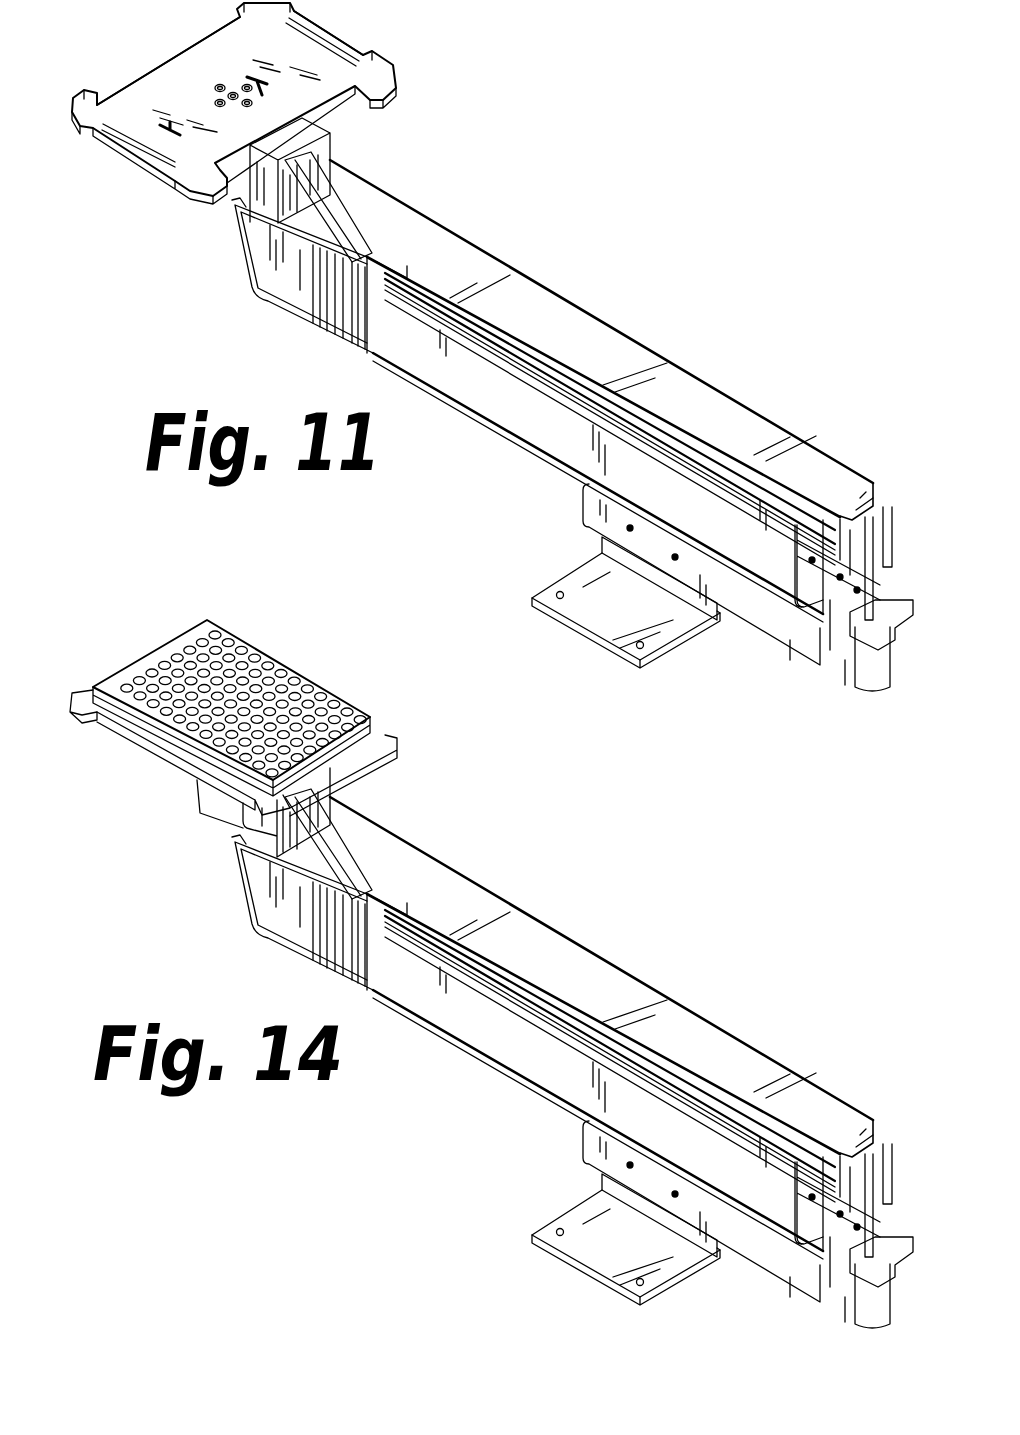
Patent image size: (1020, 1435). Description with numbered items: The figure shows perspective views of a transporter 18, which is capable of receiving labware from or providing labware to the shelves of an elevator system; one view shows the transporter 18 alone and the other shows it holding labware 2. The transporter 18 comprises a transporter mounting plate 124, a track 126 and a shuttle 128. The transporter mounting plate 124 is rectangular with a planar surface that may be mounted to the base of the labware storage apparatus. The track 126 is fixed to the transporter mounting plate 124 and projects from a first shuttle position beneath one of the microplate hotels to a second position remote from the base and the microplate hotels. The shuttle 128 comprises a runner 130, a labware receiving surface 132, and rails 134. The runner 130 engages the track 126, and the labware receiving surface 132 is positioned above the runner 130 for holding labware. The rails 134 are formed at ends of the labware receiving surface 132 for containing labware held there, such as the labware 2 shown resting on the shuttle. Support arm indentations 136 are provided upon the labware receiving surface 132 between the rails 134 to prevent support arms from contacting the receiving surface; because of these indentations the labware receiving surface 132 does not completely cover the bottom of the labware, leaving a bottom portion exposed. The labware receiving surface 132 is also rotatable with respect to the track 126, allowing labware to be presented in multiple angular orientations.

In FIG. 14, the labware 2 is at (293, 673).
In FIG. 11, the transporter 18 is at (415, 180).
In FIG. 14, the transporter 18 is at (573, 917).
In FIG. 11, the transporter mounting plate 124 is at (580, 577).
In FIG. 14, the transporter mounting plate 124 is at (580, 1214).
In FIG. 11, the track 126 is at (570, 387).
In FIG. 14, the track 126 is at (570, 1024).
In FIG. 11, the shuttle 128 is at (197, 137).
In FIG. 14, the shuttle 128 is at (250, 817).
In FIG. 14, the runner 130 is at (333, 845).
In FIG. 11, the labware receiving surface 132 is at (250, 47).
In FIG. 11, the rails 134 is at (327, 40).
In FIG. 14, the rails 134 is at (70, 720).
In FIG. 11, the support arm indentations 136 is at (177, 71).